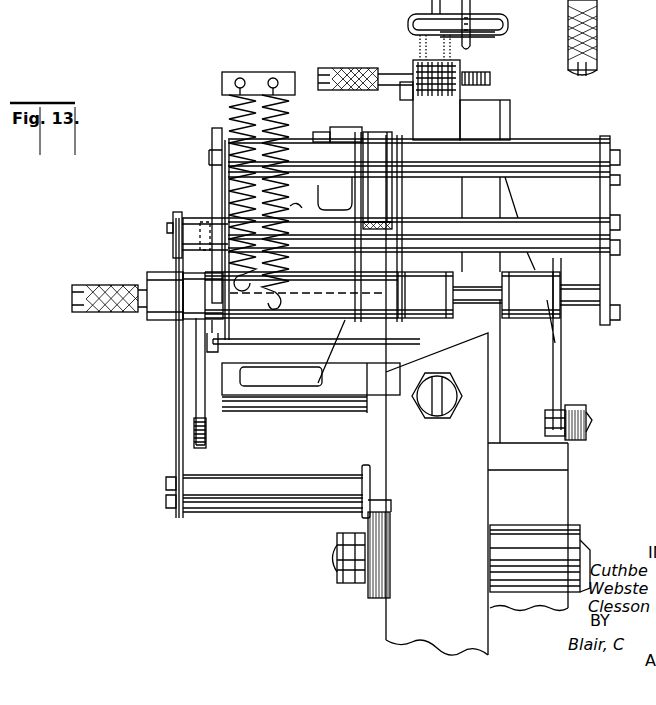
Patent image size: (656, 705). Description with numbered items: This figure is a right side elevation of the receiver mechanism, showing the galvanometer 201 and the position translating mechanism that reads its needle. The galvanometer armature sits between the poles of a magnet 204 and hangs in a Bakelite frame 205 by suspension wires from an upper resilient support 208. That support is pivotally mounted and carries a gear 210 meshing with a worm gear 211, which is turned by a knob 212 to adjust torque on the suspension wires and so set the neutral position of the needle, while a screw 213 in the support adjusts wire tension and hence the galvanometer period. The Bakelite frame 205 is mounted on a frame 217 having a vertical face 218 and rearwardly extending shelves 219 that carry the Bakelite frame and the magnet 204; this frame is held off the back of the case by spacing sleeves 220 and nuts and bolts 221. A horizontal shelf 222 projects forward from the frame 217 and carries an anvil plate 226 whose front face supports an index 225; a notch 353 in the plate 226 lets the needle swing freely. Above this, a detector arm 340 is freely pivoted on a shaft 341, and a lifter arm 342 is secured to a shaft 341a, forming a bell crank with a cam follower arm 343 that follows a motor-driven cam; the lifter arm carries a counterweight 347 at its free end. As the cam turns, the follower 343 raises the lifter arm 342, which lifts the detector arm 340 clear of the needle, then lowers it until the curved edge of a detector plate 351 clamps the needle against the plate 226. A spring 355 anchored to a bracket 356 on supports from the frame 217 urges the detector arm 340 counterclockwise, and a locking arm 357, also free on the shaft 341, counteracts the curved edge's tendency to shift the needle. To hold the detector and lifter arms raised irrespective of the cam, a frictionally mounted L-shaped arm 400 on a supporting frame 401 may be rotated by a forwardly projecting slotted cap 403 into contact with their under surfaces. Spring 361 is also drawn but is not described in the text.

The galvanometer 201 is at (519, 103).
The magnet 204 is at (424, 612).
The Bakelite frame 205 is at (488, 124).
The upper resilient support 208 is at (508, 14).
The gear 210 is at (488, 78).
The worm gear 211 is at (420, 60).
The knob 212 is at (346, 66).
The screw 213 is at (475, 44).
The frame 217 is at (358, 422).
The vertical face 218 is at (380, 574).
The shelves 219 is at (553, 456).
The spacing sleeves 220 is at (523, 540).
The nuts and bolts 221 is at (345, 548).
The horizontal shelf 222 is at (273, 373).
The index 225 is at (198, 371).
The anvil plate 226 is at (212, 425).
The detector arm 340 is at (300, 195).
The shaft 341 is at (318, 318).
The shaft 341a is at (586, 302).
The lifter arm 342 is at (408, 215).
The cam follower arm 343 is at (562, 358).
The counterweight 347 is at (340, 128).
The detector plate 351 is at (212, 139).
The notch 353 is at (207, 345).
The spring 355 is at (284, 122).
The bracket 356 is at (256, 74).
The locking arm 357 is at (206, 218).
The spring 361 is at (232, 106).
The L-shaped arm 400 is at (262, 342).
The supporting frame 401 is at (154, 278).
The slotted cap 403 is at (600, 34).